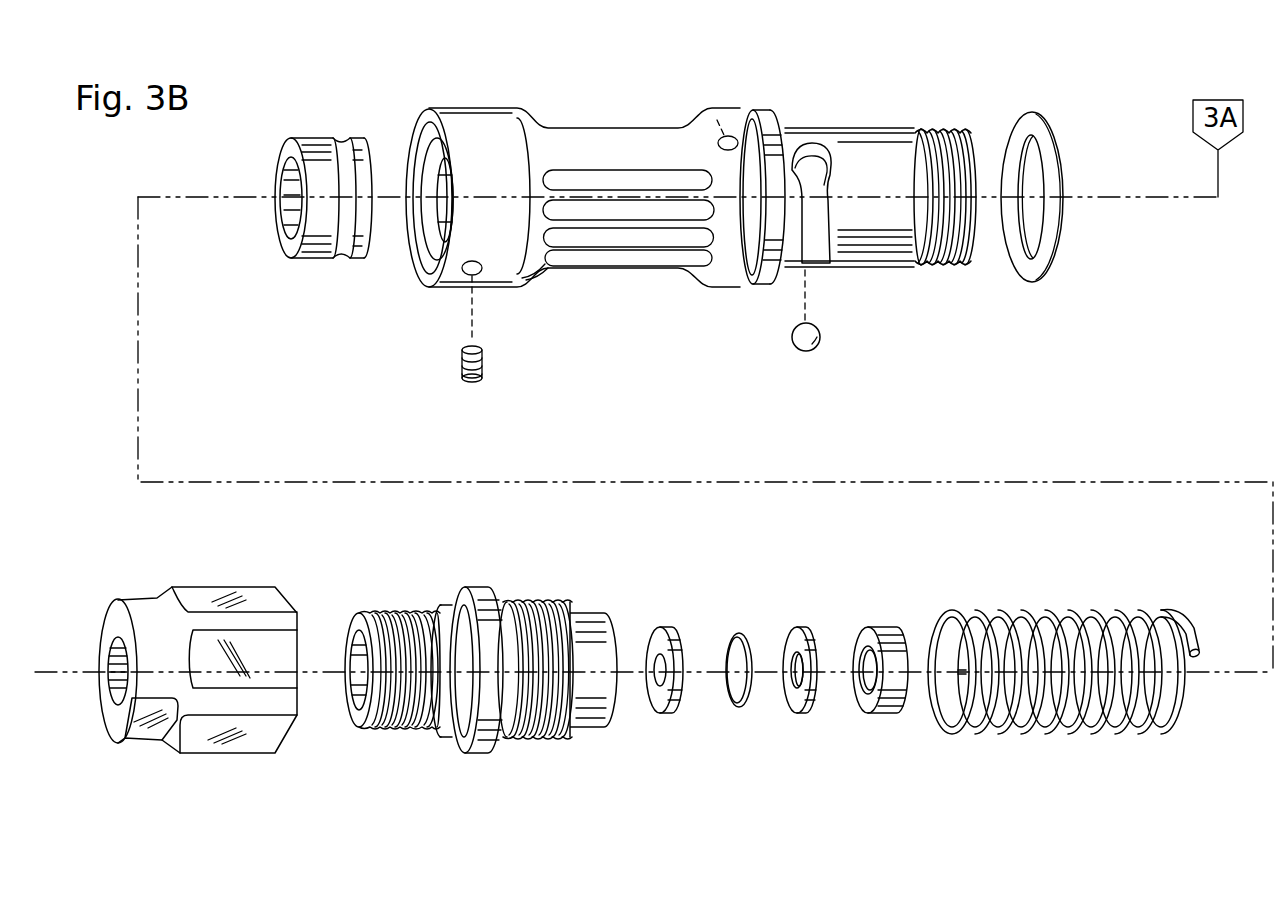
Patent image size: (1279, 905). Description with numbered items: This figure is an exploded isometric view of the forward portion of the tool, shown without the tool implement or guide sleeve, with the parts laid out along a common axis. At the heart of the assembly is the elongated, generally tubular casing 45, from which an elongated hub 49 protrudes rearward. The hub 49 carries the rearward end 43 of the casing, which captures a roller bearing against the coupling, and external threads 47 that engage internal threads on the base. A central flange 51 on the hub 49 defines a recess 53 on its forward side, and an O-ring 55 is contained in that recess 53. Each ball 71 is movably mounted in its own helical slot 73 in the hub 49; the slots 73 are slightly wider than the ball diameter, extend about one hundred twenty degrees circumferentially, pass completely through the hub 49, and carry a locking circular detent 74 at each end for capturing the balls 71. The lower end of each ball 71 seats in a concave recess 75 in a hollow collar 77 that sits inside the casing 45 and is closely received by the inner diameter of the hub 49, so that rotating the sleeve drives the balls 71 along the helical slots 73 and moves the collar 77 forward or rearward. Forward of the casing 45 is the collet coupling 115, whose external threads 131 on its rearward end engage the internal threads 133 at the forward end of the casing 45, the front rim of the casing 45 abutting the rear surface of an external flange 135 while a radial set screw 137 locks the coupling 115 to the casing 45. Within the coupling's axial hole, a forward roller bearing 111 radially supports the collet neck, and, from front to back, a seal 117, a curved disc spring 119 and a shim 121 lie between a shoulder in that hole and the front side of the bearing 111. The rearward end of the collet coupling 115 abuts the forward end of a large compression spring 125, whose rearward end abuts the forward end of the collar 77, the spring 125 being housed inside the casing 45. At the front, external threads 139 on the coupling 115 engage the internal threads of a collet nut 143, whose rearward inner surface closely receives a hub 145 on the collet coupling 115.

The casing 45 is at (649, 436).
The rearward end 43 is at (970, 140).
The external threads 47 is at (947, 128).
The hub 49 is at (885, 127).
The central flange 51 is at (754, 112).
The recess 53 is at (745, 112).
The O-ring 55 is at (1034, 262).
The ball 71 is at (804, 349).
The helical slot 73 is at (817, 245).
The locking circular detent 74 is at (820, 147).
The concave recess 75 is at (343, 155).
The hollow collar 77 is at (303, 141).
The internal threads 133 is at (428, 243).
The radial set screw 137 is at (488, 373).
The forward roller bearing 111 is at (885, 645).
The collet coupling 115 is at (506, 681).
The seal 117 is at (660, 635).
The curved disc spring 119 is at (735, 640).
The shim 121 is at (803, 632).
The compression spring 125 is at (1059, 617).
The external threads 131 is at (515, 602).
The external flange 135 is at (475, 598).
The external threads 139 is at (372, 612).
The collet nut 143 is at (192, 597).
The hub 145 is at (459, 752).